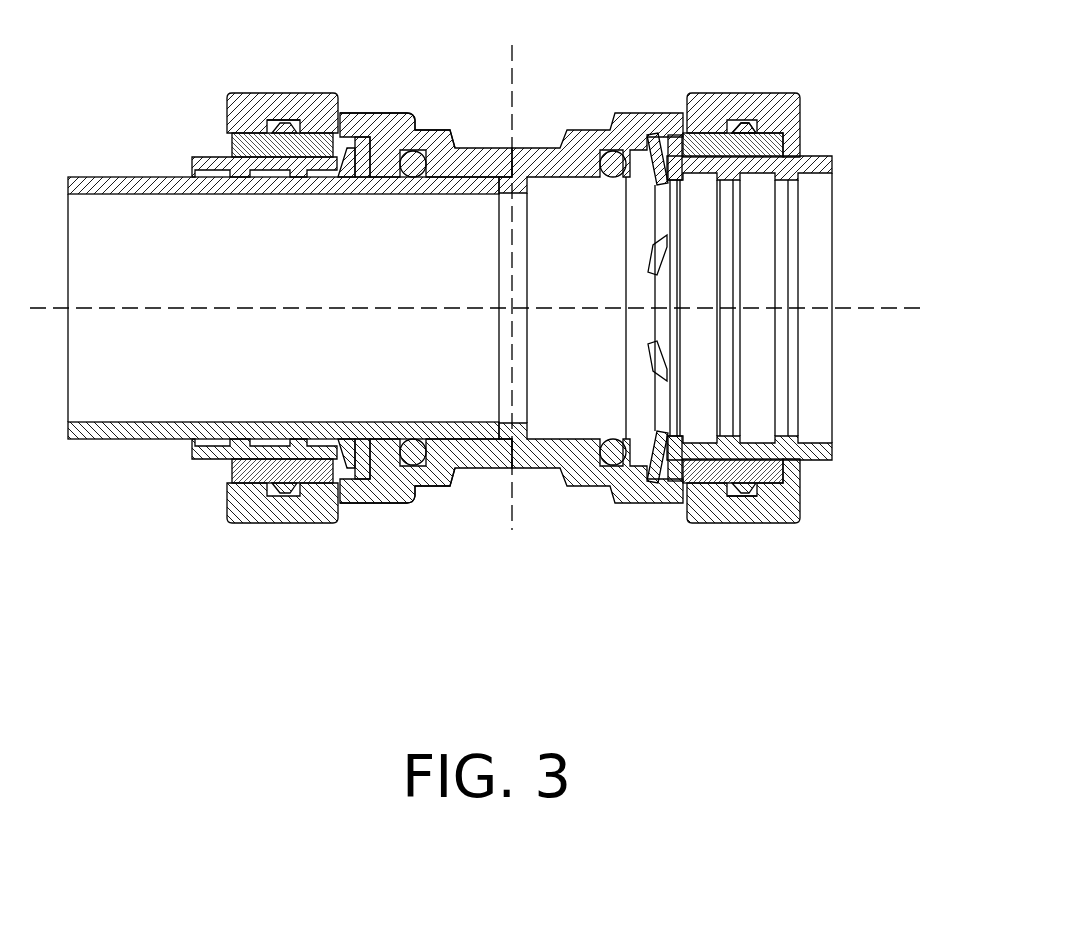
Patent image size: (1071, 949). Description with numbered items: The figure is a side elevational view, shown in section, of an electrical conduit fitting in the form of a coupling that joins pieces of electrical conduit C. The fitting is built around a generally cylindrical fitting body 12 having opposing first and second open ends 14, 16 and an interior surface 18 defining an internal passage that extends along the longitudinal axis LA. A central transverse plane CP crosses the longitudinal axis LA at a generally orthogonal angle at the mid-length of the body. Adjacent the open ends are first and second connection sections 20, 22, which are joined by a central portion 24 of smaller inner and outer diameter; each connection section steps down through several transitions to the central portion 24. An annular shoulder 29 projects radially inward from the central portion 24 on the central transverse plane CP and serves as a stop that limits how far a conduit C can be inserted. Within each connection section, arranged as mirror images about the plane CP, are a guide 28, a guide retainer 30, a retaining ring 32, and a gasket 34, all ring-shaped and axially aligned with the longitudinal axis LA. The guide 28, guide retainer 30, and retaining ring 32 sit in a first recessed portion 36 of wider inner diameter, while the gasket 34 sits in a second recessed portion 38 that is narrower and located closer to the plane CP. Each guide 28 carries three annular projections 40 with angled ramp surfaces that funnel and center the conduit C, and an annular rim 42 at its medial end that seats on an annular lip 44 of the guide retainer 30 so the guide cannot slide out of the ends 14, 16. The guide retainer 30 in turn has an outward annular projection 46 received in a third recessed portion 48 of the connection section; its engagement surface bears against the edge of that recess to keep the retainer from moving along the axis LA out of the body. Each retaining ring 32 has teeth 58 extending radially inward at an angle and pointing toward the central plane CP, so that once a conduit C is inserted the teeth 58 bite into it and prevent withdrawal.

The fitting body 12 is at (437, 118).
The first open end 14 is at (227, 512).
The second open end 16 is at (797, 515).
The interior surface 18 is at (568, 188).
The first connection section 20 is at (233, 523).
The second connection section 22 is at (772, 92).
The central portion 24 is at (528, 465).
The guide 28 is at (191, 157).
The annular shoulder 29 is at (498, 170).
The guide retainer 30 is at (299, 118).
The retaining ring 32 is at (365, 445).
The gasket 34 is at (612, 160).
The first recessed portion 36 is at (690, 150).
The second recessed portion 38 is at (398, 128).
The annular projection 40 is at (230, 152).
The annular rim 42 is at (677, 455).
The annular lip 44 is at (345, 138).
The annular projection 46 is at (740, 130).
The third recessed portion 48 is at (283, 126).
The teeth 58 is at (657, 180).
The electrical conduit C is at (98, 427).
The central transverse plane CP is at (510, 508).
The longitudinal axis LA is at (878, 308).